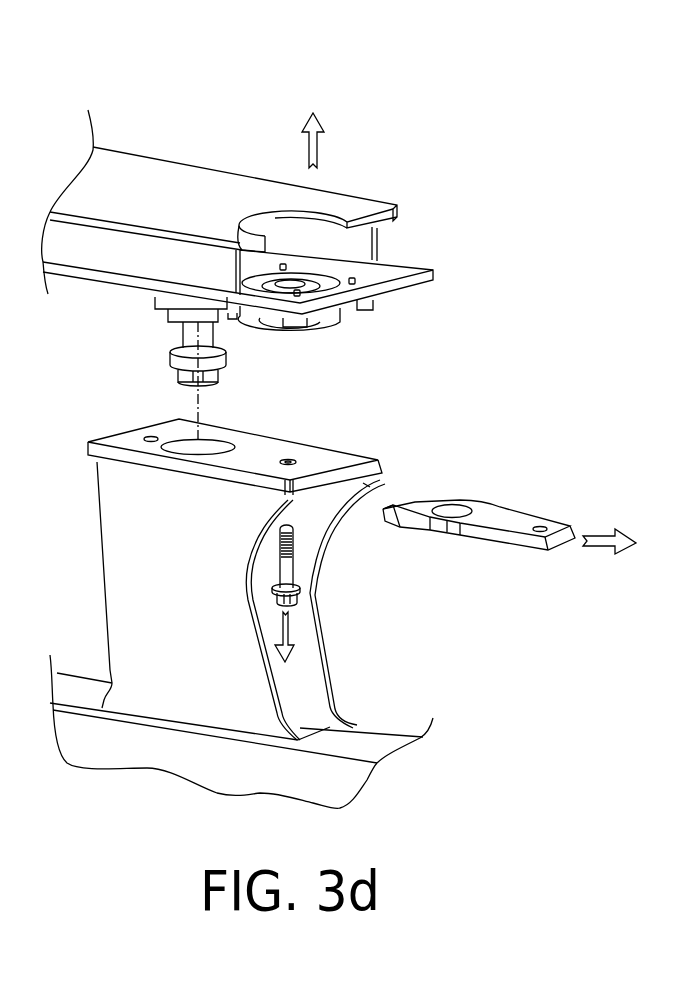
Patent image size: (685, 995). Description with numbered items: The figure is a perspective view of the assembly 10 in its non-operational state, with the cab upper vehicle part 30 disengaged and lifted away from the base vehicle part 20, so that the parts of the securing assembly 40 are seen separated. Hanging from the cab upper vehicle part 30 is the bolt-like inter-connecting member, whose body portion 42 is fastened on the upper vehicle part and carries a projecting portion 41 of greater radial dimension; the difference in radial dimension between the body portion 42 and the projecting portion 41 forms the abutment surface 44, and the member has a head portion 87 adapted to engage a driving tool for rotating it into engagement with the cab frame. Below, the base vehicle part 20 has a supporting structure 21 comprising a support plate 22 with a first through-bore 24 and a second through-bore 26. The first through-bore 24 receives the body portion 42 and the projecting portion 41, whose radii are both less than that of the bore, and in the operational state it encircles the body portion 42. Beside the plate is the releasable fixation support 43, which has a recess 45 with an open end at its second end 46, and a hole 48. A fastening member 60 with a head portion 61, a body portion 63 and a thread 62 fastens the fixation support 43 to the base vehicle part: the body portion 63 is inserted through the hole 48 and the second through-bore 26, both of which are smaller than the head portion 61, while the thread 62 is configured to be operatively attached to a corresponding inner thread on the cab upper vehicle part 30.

The assembly 10 is at (418, 150).
The cab upper vehicle part 30 is at (199, 193).
The head portion 87 is at (203, 380).
The securing assembly 40 is at (197, 336).
The body portion 42 is at (197, 336).
The abutment surface 44 is at (182, 360).
The projecting portion 41 is at (185, 372).
The releasable fixation support 43 is at (505, 520).
The recess 45 is at (442, 513).
The second end 46 is at (401, 503).
The hole 48 is at (542, 520).
The base vehicle part 20 is at (150, 553).
The supporting structure 21 is at (150, 595).
The support plate 22 is at (266, 450).
The first through-bore 24 is at (165, 444).
The second through-bore 26 is at (288, 462).
The fastening member 60 is at (295, 567).
The head portion 61 is at (300, 598).
The thread 62 is at (293, 538).
The body portion 63 is at (296, 577).